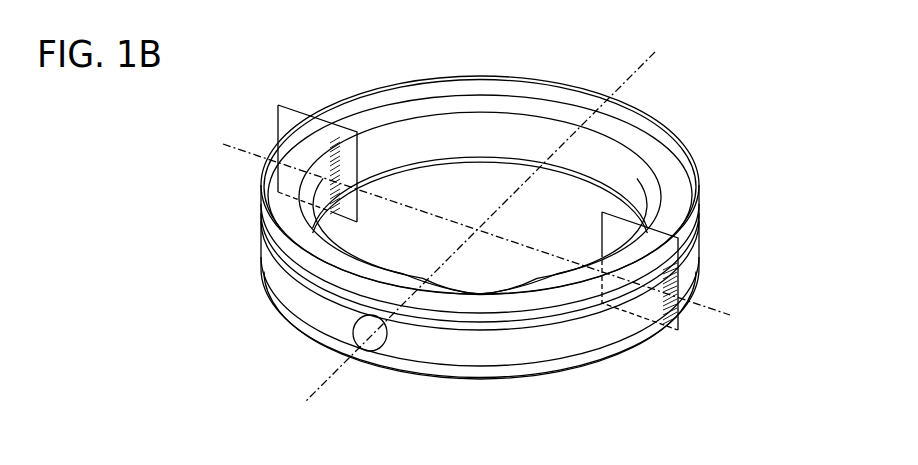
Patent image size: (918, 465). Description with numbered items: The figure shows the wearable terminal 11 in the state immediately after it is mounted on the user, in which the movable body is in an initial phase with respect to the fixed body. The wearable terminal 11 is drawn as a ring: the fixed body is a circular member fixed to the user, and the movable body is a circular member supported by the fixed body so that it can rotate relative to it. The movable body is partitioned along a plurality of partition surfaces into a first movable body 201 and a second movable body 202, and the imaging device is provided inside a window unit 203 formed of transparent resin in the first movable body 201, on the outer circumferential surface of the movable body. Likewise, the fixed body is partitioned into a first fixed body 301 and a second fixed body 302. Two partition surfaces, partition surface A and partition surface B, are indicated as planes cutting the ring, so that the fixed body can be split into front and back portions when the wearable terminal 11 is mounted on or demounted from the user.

The wearable terminal 11 is at (454, 227).
The first movable body 201 is at (268, 268).
The second movable body 202 is at (697, 242).
The window unit 203 is at (352, 328).
The first fixed body 301 is at (292, 217).
The second fixed body 302 is at (655, 147).
The partition surface A is at (278, 108).
The partition surface B is at (683, 277).